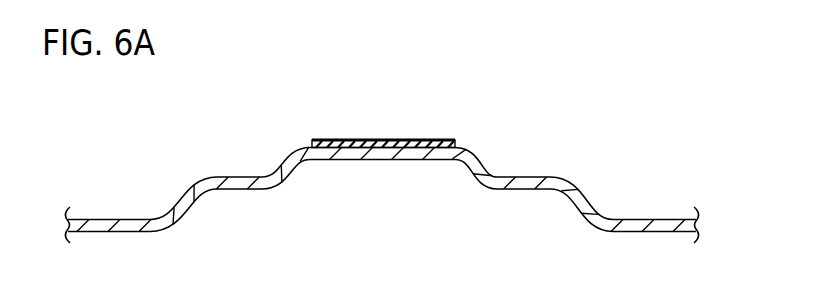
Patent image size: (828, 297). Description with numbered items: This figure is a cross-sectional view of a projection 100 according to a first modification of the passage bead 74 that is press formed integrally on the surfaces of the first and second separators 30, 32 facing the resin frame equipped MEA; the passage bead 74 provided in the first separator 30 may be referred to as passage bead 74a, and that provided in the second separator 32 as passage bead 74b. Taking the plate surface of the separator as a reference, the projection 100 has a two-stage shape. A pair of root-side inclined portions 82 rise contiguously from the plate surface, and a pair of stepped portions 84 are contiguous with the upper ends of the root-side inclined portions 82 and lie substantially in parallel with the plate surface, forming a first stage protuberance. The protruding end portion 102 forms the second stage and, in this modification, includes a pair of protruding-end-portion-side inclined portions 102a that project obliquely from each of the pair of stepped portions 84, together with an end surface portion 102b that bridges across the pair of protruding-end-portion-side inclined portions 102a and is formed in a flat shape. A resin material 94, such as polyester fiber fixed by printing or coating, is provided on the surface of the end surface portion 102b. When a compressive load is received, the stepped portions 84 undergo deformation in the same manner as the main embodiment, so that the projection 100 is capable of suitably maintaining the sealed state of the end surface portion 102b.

The first separator 30 is at (375, 157).
The second separator 32 is at (375, 157).
The passage bead 74 is at (381, 157).
The passage bead of first separator 74a is at (381, 157).
The passage bead of second separator 74b is at (254, 125).
The root-side inclined portion 82 is at (190, 203).
The stepped portion 84 is at (240, 183).
The projection 100 is at (295, 152).
The resin material 94 is at (377, 145).
The protruding end portion 102 is at (365, 205).
The protruding-end-portion-side inclined portion 102a is at (295, 163).
The end surface portion 102b is at (403, 153).